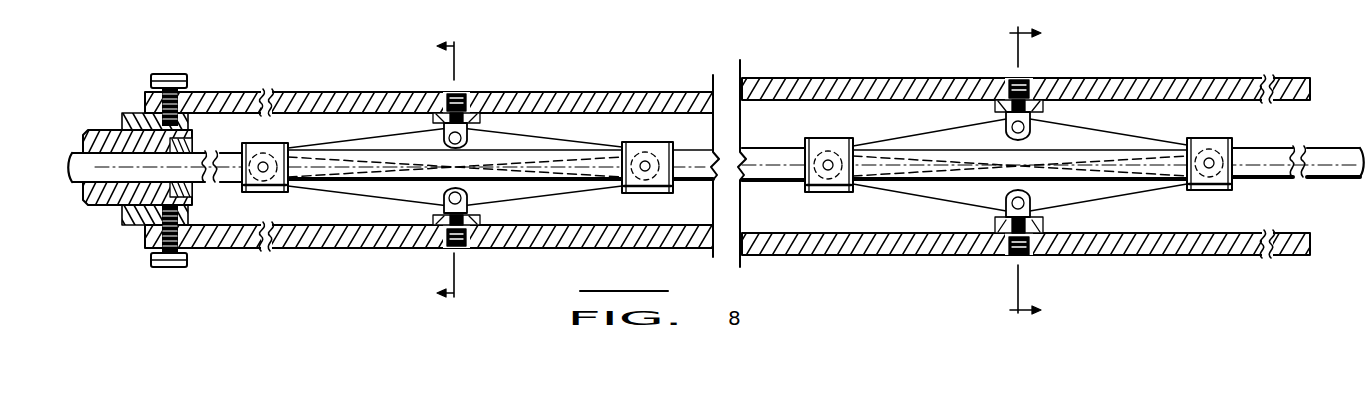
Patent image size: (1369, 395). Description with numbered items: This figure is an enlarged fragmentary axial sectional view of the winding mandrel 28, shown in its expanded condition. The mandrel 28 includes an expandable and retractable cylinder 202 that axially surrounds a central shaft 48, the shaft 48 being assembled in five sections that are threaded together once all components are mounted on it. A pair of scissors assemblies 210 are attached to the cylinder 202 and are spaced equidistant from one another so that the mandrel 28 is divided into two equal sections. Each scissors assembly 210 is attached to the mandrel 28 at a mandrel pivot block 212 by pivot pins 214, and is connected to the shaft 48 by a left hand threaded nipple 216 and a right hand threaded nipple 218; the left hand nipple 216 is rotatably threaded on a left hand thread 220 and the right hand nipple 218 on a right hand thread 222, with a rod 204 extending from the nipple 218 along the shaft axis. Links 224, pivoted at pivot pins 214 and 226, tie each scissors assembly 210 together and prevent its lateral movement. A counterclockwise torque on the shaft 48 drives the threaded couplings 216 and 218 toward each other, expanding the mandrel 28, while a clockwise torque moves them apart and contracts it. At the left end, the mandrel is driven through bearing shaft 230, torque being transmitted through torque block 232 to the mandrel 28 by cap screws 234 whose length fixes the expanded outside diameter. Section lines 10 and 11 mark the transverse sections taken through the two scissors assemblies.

The mandrel 28 is at (1233, 265).
The central shaft 48 is at (1323, 178).
The expandable and retractable cylinder 202 is at (606, 92).
The connecting rod 204 is at (688, 181).
The scissors assembly 210 is at (345, 198).
The mandrel pivot block 212 is at (478, 110).
The pivot pin 214 is at (435, 124).
The left hand threaded nipple 216 is at (258, 193).
The right hand threaded nipple 218 is at (648, 195).
The left hand thread 220 is at (268, 142).
The right hand thread 222 is at (666, 145).
The link 224 is at (536, 140).
The pivot pin 226 is at (243, 187).
The bearing shaft 230 is at (193, 131).
The torque block 232 is at (130, 113).
The cap screw 234 is at (165, 75).
The section line 10- 10 is at (430, 169).
The section line 11- 11 is at (1041, 172).